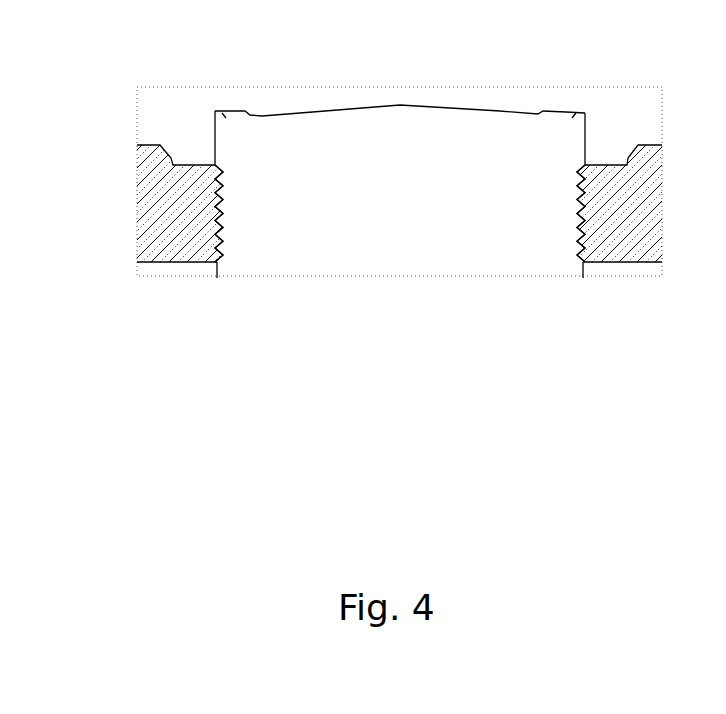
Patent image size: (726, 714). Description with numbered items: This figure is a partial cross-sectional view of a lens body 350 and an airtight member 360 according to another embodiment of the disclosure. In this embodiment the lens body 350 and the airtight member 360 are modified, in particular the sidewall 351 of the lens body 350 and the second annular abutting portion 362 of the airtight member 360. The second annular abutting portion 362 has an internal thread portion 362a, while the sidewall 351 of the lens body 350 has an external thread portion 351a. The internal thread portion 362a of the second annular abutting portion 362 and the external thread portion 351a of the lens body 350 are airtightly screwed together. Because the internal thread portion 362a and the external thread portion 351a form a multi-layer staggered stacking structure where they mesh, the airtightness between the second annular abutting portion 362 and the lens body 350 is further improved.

The lens body 350 is at (391, 196).
The sidewall 351 is at (216, 138).
The external thread portion 351a is at (224, 236).
The airtight member 360 is at (366, 148).
The second annular abutting portion 362 is at (366, 203).
The internal thread portion 362a is at (224, 236).